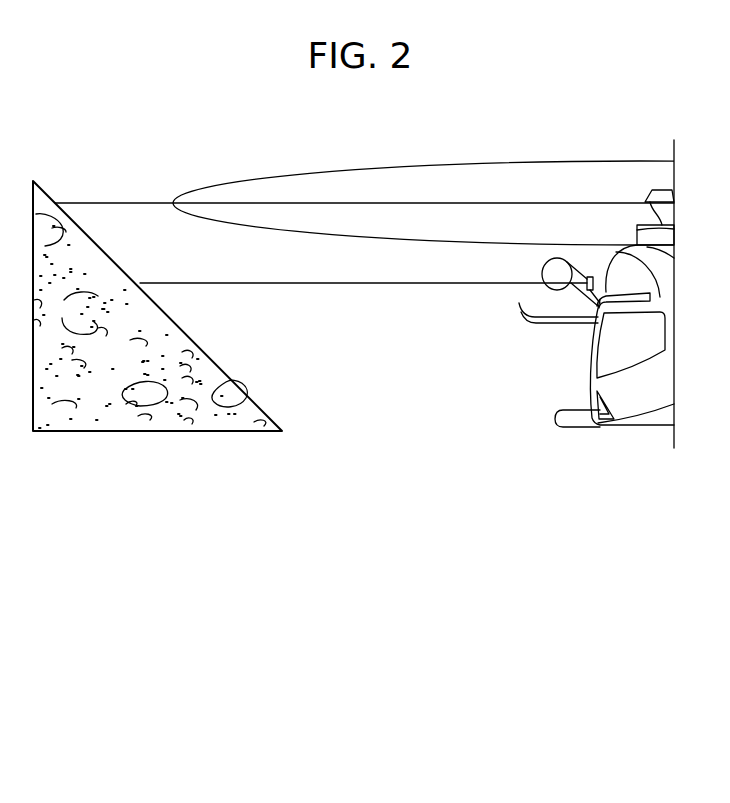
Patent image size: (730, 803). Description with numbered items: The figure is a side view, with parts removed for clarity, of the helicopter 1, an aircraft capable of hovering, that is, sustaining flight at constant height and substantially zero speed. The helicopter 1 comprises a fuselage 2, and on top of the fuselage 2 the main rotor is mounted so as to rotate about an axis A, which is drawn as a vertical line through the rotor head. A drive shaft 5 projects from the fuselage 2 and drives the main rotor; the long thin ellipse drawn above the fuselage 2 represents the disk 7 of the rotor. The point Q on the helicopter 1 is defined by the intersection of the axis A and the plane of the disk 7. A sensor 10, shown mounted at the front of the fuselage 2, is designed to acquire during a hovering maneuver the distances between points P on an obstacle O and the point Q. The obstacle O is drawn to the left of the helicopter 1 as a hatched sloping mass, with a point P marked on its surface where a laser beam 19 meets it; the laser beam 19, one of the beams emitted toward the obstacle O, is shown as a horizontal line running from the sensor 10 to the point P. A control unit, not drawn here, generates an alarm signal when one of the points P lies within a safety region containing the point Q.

The helicopter 1 is at (540, 385).
The fuselage 2 is at (637, 400).
The drive shaft 5 is at (674, 236).
The disk of the rotor 7 is at (410, 165).
The sensor 10 is at (577, 292).
The laser beam 19 is at (375, 283).
The point on an obstacle P is at (142, 283).
The obstacle O is at (243, 388).
The point on the helicopter Q is at (673, 192).
The axis A is at (674, 142).